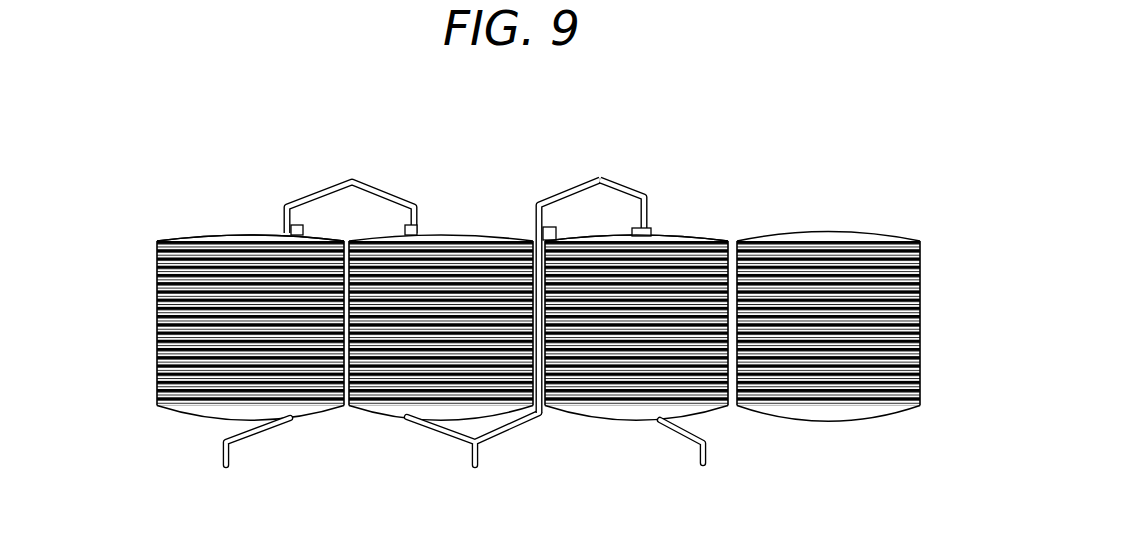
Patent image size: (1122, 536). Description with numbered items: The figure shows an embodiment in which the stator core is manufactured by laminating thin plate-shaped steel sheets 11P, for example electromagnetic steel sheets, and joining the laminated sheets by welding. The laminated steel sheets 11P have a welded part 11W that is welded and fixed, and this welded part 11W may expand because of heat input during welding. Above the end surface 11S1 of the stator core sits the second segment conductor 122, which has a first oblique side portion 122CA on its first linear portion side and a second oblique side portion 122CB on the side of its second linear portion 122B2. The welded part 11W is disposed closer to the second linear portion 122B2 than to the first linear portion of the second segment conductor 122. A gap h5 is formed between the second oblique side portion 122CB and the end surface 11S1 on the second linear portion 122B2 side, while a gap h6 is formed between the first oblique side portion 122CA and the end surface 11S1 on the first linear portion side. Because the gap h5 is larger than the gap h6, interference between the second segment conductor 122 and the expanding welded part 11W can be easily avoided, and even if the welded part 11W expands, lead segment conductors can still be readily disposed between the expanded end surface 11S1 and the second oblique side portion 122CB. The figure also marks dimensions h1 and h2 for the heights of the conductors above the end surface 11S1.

The steel sheets 11P is at (930, 240).
The end surface of the stator core 11S1 is at (160, 241).
The welded part 11W is at (622, 230).
The second segment conductor 122 is at (616, 247).
The first oblique side portion 122CA is at (567, 191).
The second oblique side portion 122CB is at (628, 190).
The second linear portion 122B2 is at (556, 212).
The height h1 is at (356, 190).
The height h2 is at (608, 193).
The gap h5 is at (650, 201).
The gap h6 is at (735, 232).